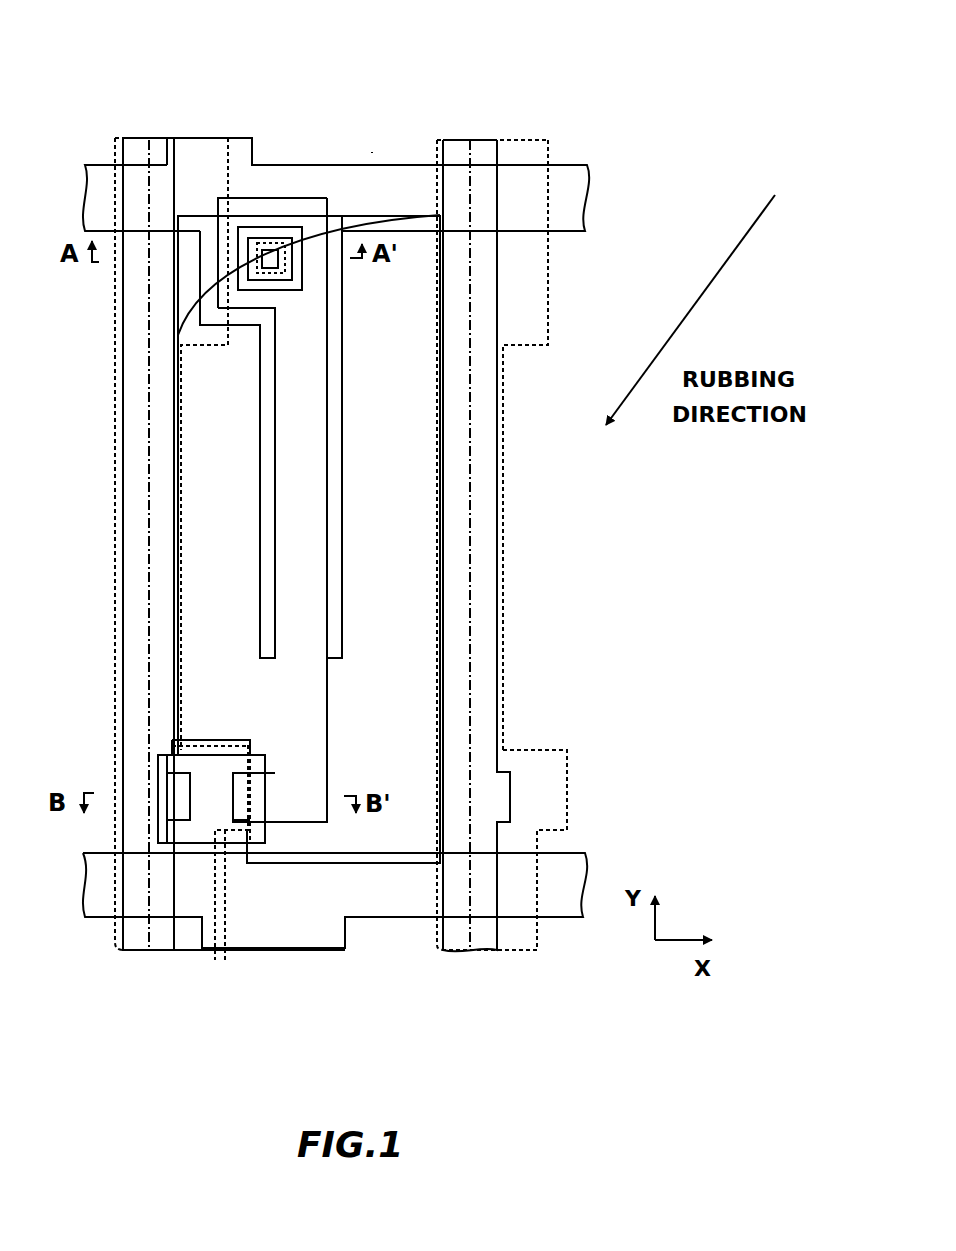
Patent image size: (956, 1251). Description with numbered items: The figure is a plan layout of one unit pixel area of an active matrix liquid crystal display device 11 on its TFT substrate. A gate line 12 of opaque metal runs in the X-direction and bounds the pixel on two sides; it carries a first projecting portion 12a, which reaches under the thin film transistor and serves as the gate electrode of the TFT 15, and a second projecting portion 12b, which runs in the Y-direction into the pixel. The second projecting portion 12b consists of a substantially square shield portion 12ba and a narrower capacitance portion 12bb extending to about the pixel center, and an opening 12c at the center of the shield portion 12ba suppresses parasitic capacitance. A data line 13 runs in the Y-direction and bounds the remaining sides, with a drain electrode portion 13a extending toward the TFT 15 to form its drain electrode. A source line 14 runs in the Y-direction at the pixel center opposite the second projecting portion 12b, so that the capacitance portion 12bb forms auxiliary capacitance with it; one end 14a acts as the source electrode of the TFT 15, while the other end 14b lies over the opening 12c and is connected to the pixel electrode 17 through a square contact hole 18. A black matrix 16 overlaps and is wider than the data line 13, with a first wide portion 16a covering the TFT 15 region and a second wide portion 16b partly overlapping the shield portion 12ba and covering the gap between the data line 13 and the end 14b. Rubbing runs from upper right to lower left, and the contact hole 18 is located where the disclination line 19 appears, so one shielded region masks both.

The active matrix liquid crystal display device 11 is at (375, 150).
The gate line 12 is at (290, 185).
The first projecting portion 12a is at (174, 155).
The second projecting portion 12b is at (345, 370).
The shield portion 12ba is at (258, 340).
The capacitance portion 12bb is at (345, 582).
The opening 12c is at (300, 258).
The data line 13 is at (128, 152).
The drain electrode portion 13a is at (177, 780).
The source line 14 is at (300, 626).
The one end of source line 14a is at (255, 807).
The other end of source line 14b is at (262, 205).
The TFT 15 is at (195, 847).
The black matrix 16 is at (115, 525).
The first wide portion 16a is at (548, 768).
The second wide portion 16b is at (184, 352).
The pixel electrode 17 is at (342, 215).
The contact hole 18 is at (280, 265).
The disclination line 19 is at (178, 322).